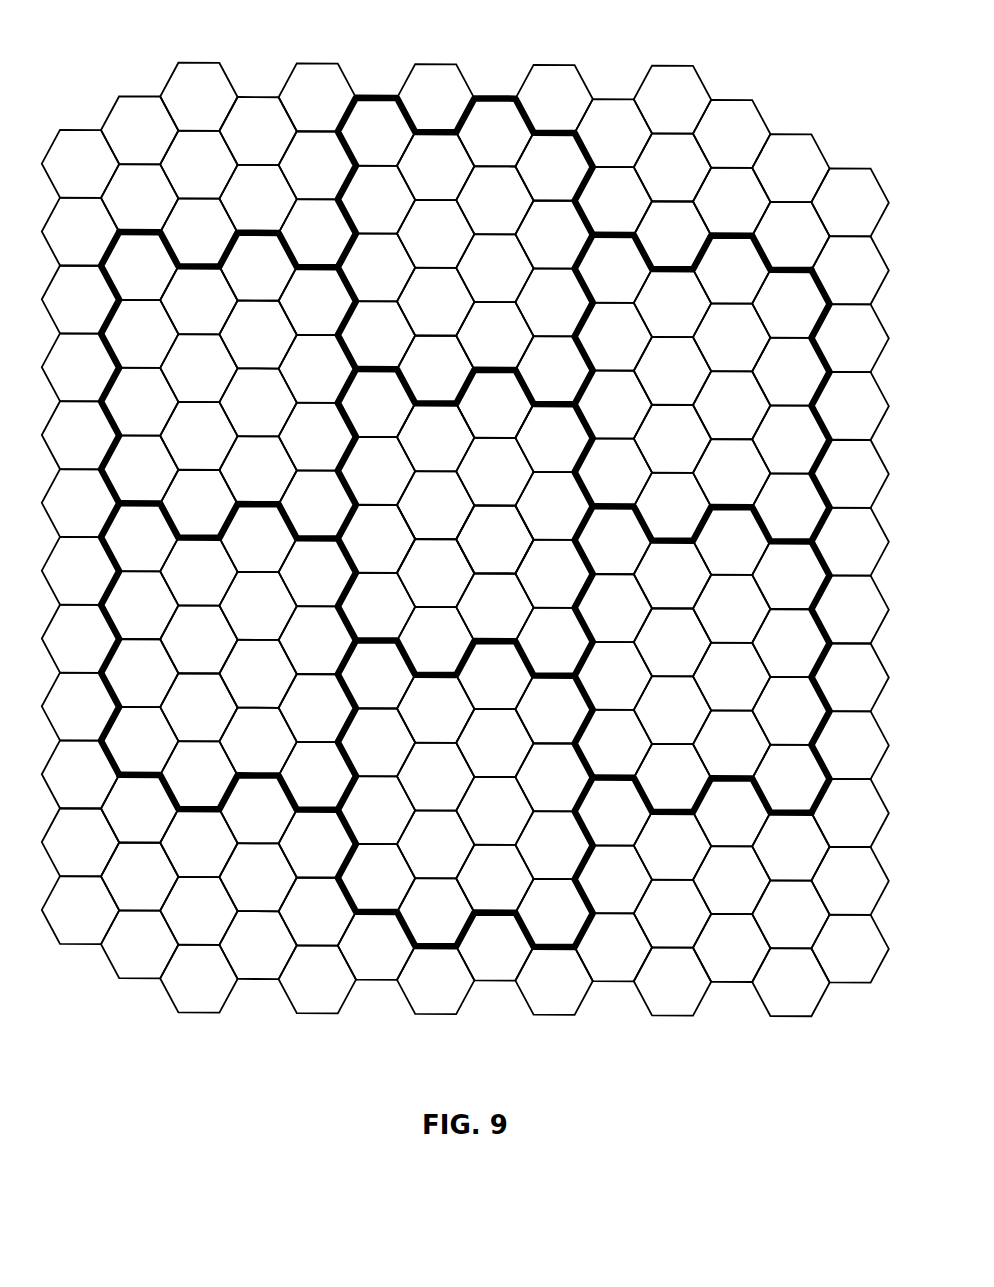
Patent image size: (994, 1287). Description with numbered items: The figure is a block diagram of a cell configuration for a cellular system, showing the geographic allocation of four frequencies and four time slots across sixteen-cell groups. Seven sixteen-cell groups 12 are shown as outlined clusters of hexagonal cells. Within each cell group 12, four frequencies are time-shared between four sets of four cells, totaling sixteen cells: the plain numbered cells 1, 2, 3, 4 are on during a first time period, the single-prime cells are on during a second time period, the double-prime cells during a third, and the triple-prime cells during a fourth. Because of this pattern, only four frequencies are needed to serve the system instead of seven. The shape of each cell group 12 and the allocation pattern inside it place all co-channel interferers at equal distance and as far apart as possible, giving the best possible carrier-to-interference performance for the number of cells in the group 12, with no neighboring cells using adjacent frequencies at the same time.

The 16-cell group 12 is at (465, 518).
The plain numbered cell 1 is at (376, 403).
The plain numbered cell 2 is at (376, 539).
The plain numbered cell 3 is at (494, 404).
The plain numbered cell 4 is at (494, 539).